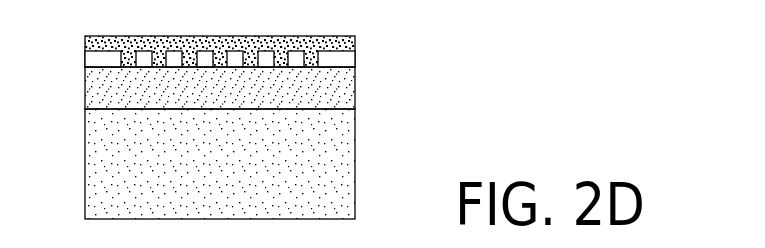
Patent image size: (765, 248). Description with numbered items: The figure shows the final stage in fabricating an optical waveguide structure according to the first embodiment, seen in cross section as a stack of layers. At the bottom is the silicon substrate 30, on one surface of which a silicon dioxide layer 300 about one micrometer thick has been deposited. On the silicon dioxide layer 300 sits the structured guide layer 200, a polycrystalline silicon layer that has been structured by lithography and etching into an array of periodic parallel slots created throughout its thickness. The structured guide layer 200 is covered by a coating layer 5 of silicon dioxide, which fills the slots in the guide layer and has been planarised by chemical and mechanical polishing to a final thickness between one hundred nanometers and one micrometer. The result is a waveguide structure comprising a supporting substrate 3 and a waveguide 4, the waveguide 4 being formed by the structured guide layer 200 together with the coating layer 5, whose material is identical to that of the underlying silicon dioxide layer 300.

The supporting substrate 3 is at (67, 69).
The waveguide 4 is at (69, 68).
The coating layer 5 is at (356, 50).
The silicon substrate 30 is at (346, 137).
The structured guide layer 200 is at (351, 59).
The silicon dioxide layer 300 is at (349, 97).